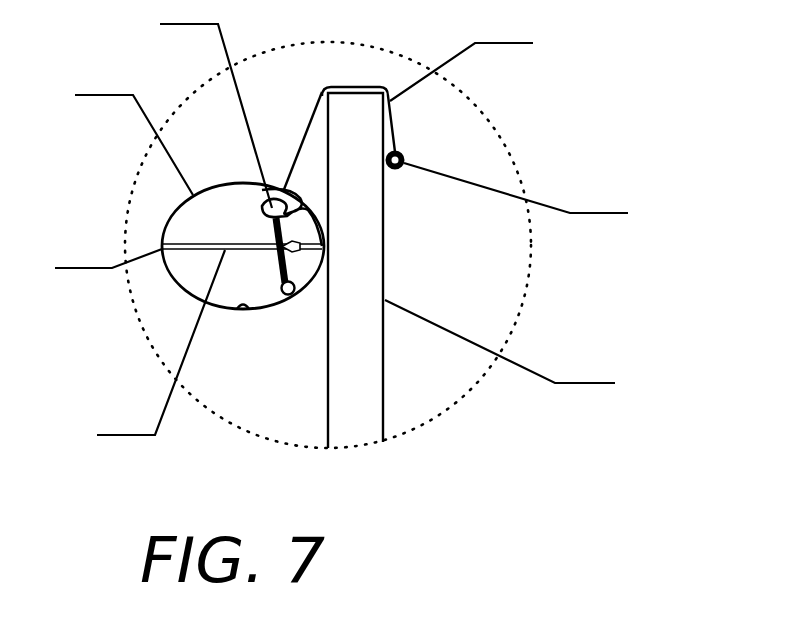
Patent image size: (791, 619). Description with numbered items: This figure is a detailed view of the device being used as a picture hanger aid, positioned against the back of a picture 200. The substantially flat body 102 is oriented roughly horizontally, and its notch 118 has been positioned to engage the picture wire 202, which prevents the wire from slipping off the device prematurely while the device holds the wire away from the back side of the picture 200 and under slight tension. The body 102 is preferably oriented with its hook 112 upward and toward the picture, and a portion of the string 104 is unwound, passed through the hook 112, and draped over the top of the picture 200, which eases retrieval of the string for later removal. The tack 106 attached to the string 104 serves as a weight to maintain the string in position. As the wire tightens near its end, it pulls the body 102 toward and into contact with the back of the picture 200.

The body 102 is at (181, 197).
The string 104 is at (482, 67).
The tack 106 is at (530, 194).
The hook 112 is at (225, 155).
The notch 118 is at (172, 266).
The picture 200 is at (490, 267).
The picture wire 202 is at (138, 355).